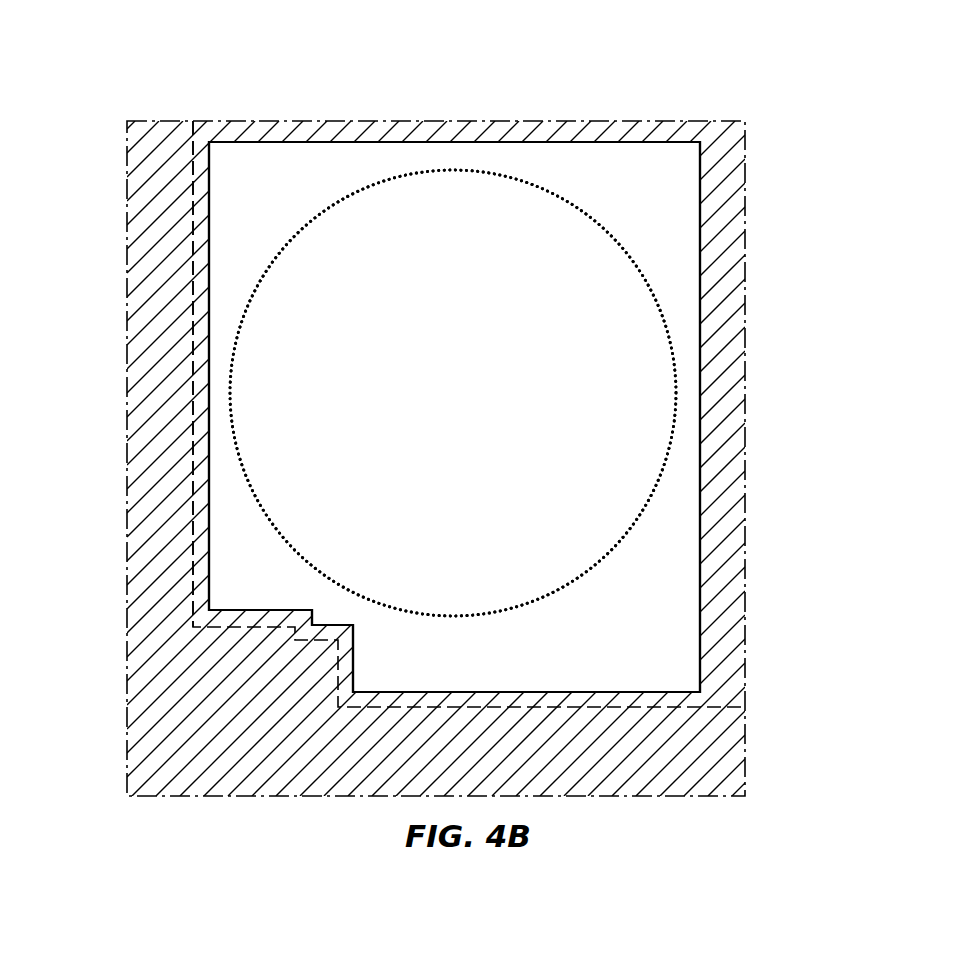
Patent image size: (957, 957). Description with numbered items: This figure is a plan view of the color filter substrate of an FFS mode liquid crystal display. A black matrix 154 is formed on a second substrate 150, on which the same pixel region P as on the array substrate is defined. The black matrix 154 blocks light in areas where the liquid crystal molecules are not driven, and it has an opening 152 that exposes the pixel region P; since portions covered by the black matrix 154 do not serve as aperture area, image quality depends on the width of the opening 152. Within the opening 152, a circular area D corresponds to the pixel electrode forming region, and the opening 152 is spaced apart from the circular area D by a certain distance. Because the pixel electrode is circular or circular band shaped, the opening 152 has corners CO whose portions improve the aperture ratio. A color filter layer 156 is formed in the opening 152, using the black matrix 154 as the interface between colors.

The second substrate 150 is at (678, 128).
The opening 152 is at (239, 139).
The black matrix 154 is at (383, 140).
The color filter layer 156 is at (650, 407).
The pixel region P is at (184, 183).
The circular area D is at (508, 176).
The corners CO is at (223, 157).